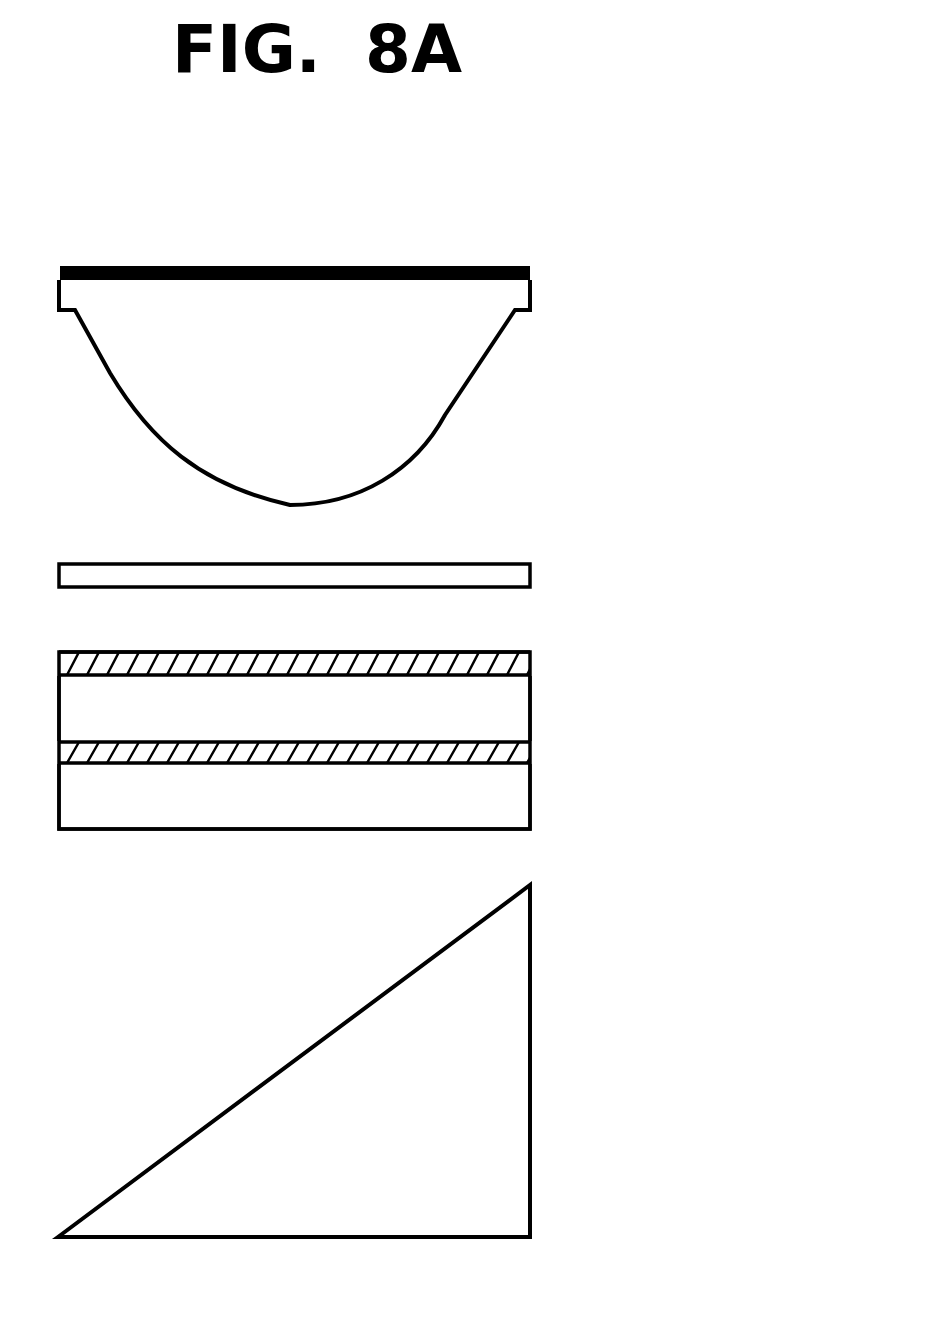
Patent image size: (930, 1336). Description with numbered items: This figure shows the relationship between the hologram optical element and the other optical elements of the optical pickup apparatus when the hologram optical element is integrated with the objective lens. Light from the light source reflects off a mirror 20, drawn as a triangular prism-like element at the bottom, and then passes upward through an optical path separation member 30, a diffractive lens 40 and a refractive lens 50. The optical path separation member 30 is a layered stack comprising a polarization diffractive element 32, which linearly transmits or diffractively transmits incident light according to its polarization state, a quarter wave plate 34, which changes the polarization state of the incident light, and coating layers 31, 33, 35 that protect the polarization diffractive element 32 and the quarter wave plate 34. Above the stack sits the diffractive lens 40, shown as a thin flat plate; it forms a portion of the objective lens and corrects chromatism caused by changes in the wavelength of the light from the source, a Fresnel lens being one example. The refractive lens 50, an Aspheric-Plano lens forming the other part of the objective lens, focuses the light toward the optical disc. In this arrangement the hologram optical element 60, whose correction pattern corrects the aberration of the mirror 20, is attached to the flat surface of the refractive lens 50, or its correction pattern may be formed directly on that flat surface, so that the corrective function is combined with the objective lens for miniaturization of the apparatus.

The mirror 20 is at (505, 1138).
The optical path separation member 30 is at (420, 696).
The coating layer 31 is at (357, 800).
The polarization diffractive element 32 is at (523, 757).
The coating layer 33 is at (518, 710).
The quarter wave plate 34 is at (523, 665).
The coating layer 35 is at (512, 642).
The diffractive lens 40 is at (517, 582).
The refractive lens 50 is at (428, 377).
The hologram optical element 60 is at (530, 268).